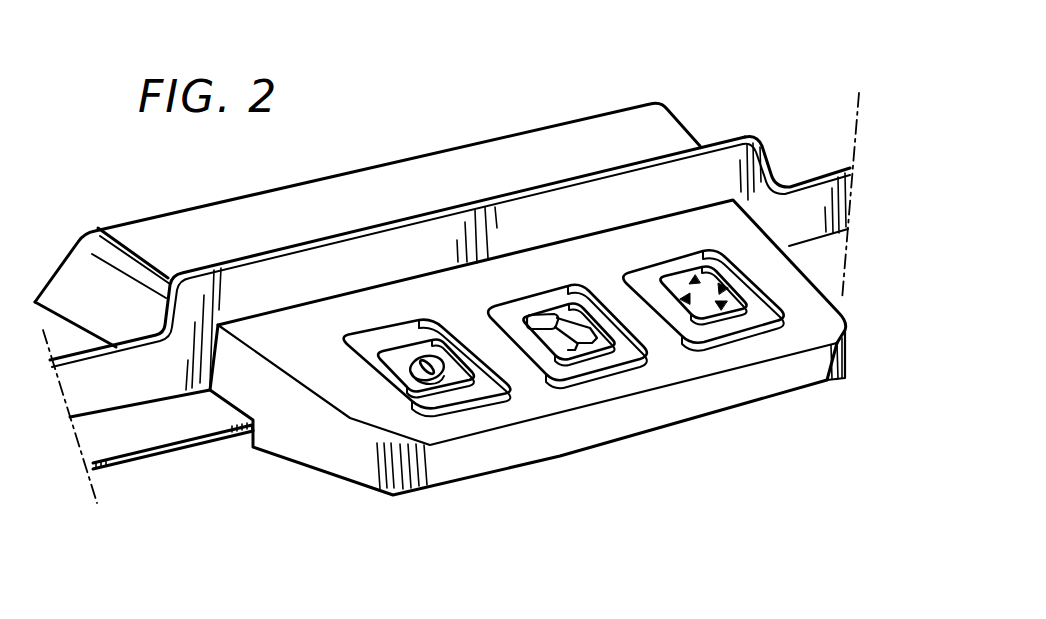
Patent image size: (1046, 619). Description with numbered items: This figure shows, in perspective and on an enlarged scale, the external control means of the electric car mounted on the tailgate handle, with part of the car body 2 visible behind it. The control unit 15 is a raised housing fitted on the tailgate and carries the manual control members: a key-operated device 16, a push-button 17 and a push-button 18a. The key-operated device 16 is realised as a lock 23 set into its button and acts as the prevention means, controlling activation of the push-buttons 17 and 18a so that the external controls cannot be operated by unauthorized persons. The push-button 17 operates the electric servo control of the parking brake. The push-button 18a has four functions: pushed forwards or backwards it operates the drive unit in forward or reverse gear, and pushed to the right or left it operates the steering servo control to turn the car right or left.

The body 2 is at (757, 138).
The control unit 15 is at (704, 420).
The key-operated device 16 is at (393, 358).
The push-button 17 is at (557, 343).
The push-button 18a is at (699, 314).
The lock 23 is at (420, 390).